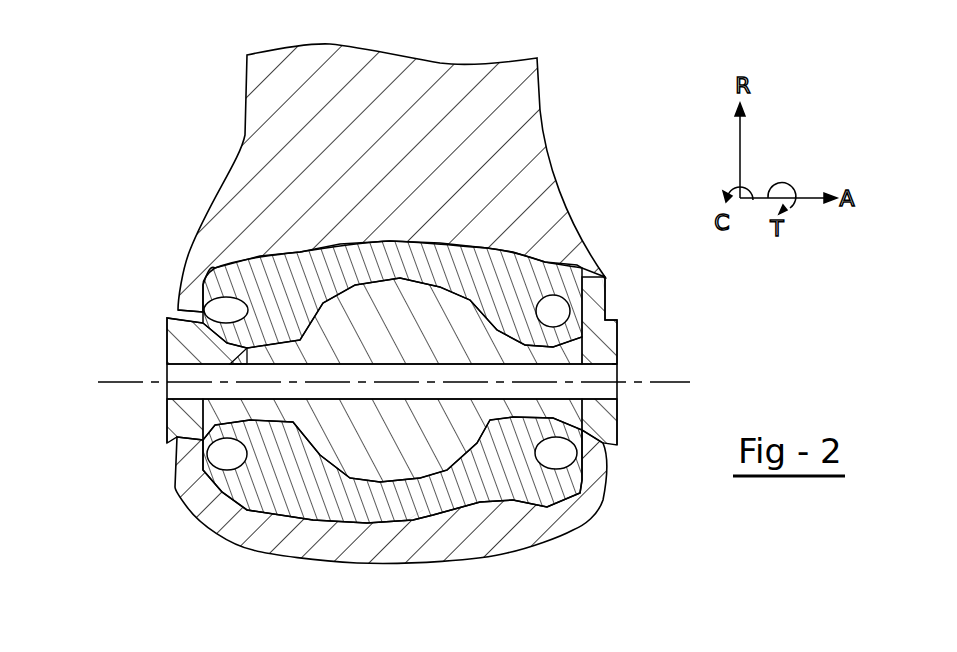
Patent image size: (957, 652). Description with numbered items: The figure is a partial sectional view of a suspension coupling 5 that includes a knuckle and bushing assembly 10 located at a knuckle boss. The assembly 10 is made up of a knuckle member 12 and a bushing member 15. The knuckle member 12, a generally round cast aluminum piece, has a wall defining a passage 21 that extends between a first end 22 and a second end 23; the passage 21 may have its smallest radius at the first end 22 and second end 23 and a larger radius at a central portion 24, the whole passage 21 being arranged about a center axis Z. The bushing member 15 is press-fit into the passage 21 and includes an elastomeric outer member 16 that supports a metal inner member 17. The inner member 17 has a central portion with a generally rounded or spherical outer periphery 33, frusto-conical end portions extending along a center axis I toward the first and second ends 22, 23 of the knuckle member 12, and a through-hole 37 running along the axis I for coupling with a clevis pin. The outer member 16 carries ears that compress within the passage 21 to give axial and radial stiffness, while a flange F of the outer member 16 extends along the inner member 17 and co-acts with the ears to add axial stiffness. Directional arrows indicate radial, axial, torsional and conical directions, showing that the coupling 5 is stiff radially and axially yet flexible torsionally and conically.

The suspension coupling 5 is at (124, 222).
The knuckle and bushing assembly 10 is at (645, 184).
The knuckle member 12 is at (164, 518).
The bushing member 15 is at (160, 348).
The outer member 16 is at (600, 497).
The inner member 17 is at (622, 329).
The passage 21 is at (556, 183).
The first end 22 is at (177, 312).
The second end 23 is at (607, 292).
The central portion 24 is at (410, 490).
The outer periphery 33 is at (357, 562).
The through-hole 37 is at (622, 366).
The flange F is at (207, 335).
The center axis I is at (128, 383).
The center axis Z is at (668, 383).